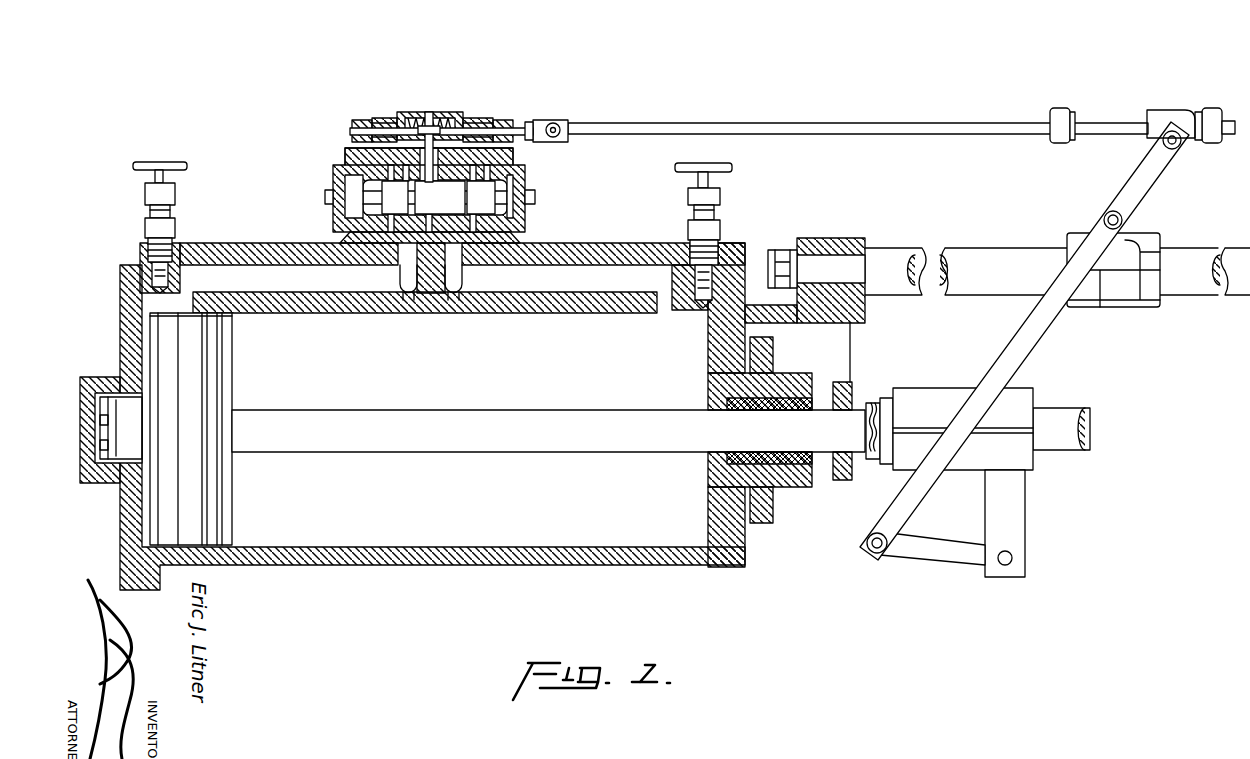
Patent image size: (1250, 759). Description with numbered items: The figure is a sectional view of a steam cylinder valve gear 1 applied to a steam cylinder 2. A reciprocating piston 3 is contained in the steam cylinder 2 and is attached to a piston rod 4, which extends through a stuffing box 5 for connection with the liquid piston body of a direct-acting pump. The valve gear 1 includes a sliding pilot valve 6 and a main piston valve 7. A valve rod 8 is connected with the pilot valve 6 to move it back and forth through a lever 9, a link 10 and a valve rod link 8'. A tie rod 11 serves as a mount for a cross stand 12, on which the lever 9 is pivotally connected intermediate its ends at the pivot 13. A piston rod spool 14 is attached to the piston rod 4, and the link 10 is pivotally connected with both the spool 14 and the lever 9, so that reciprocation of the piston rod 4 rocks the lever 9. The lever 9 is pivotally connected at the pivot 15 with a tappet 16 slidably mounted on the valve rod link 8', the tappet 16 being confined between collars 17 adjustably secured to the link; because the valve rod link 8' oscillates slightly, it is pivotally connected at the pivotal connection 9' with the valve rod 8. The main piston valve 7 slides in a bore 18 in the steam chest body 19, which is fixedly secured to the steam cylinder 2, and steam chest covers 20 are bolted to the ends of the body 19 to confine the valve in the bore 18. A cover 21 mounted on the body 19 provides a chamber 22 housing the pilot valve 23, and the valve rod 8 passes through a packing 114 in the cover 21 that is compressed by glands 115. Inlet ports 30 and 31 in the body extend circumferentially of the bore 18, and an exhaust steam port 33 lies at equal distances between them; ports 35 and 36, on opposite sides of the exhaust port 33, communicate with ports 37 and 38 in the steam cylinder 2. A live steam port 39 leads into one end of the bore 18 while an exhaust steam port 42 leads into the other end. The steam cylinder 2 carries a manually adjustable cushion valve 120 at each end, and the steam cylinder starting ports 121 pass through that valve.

The steam cylinder valve gear 1 is at (535, 114).
The steam cylinder 2 is at (262, 190).
The reciprocating piston 3 is at (227, 393).
The piston rod 4 is at (565, 410).
The stuffing box 5 is at (788, 397).
The sliding pilot valve 6 is at (446, 128).
The main piston valve 7 is at (520, 196).
The valve rod 8 is at (545, 140).
The valve rod link 8' is at (858, 118).
The lever 9 is at (1024, 341).
The pivotal connection 9' is at (580, 111).
The link 10 is at (932, 555).
The tie rod 11 is at (990, 256).
The cross stand 12 is at (1140, 238).
The pivot 13 is at (1104, 220).
The piston rod spool 14 is at (1027, 502).
The pivotal connection 15 is at (1181, 146).
The tappet 16 is at (1158, 110).
The collars 17 is at (1061, 108).
The bore 18 is at (352, 196).
The steam chest body 19 is at (345, 160).
The steam chest covers 20 is at (333, 172).
The cover 21 is at (430, 110).
The chamber 22 is at (410, 113).
The pilot valve 23 is at (441, 126).
The port 30 is at (405, 238).
The port 31 is at (463, 240).
The exhaust steam port 33 is at (435, 197).
The port 35 is at (398, 197).
The port 36 is at (484, 197).
The port 37 is at (398, 290).
The port 38 is at (463, 292).
The live steam port 39 is at (358, 150).
The exhaust steam port 42 is at (513, 162).
The packing 114 is at (378, 120).
The glands 115 is at (352, 127).
The cushion valve 120 is at (718, 214).
The steam cylinder starting ports 121 is at (705, 298).